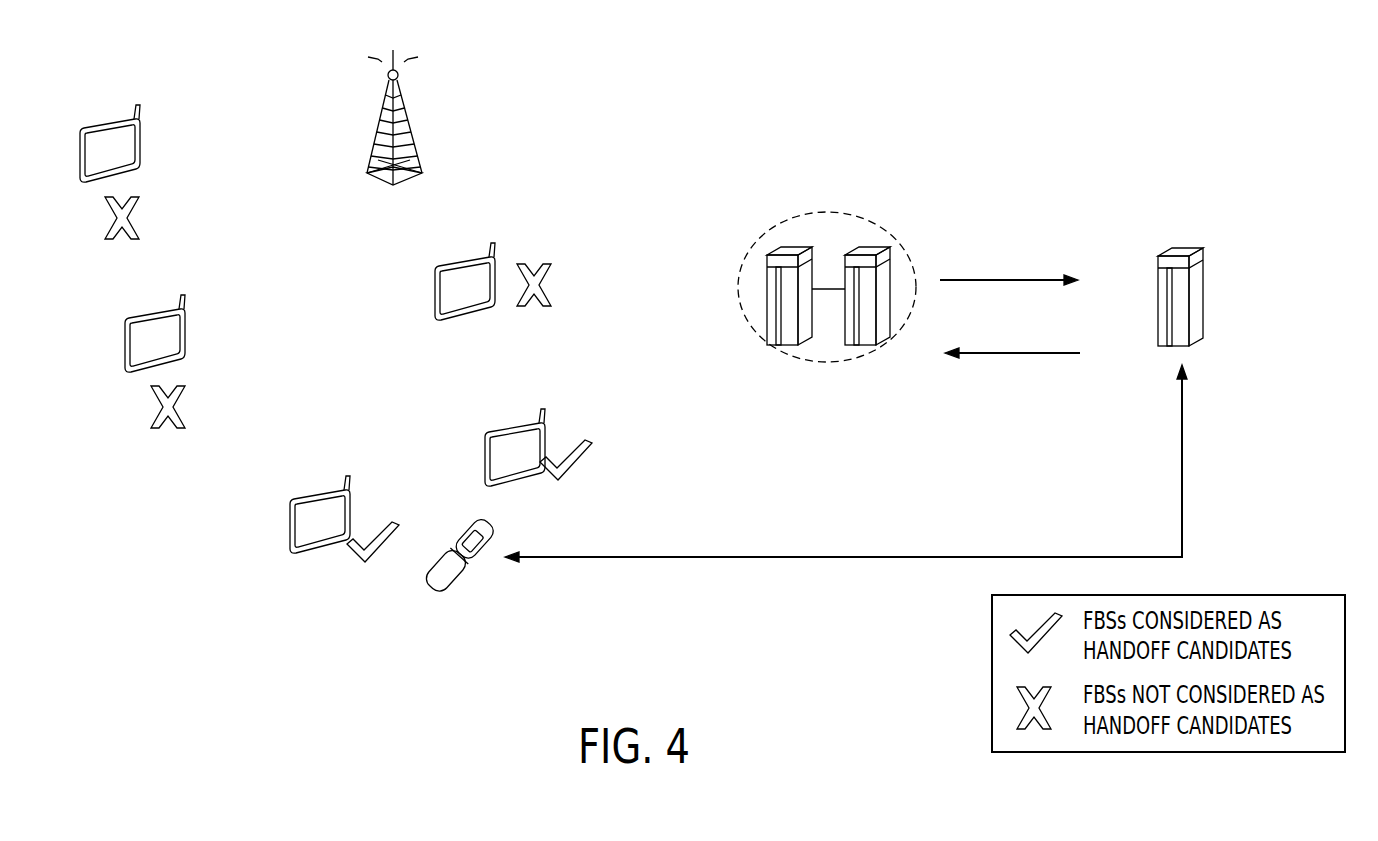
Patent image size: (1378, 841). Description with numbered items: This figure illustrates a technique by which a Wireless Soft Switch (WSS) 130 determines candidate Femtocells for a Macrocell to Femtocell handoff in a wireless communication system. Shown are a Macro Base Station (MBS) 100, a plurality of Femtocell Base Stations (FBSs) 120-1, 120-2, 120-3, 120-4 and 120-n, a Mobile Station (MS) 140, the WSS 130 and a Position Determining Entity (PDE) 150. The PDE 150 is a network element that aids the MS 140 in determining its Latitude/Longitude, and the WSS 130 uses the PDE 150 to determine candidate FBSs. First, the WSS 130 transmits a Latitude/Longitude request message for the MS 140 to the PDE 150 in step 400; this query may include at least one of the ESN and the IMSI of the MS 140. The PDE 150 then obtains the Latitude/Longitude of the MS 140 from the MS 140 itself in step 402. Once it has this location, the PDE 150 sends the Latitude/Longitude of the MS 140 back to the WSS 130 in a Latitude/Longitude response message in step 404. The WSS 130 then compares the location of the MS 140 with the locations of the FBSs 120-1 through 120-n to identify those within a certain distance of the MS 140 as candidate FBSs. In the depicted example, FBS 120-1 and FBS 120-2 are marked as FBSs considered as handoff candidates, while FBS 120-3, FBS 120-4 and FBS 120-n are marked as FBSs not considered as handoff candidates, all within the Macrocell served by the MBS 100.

The Macro Base Station 100 is at (386, 104).
The Femtocell Base Station 120-n is at (143, 140).
The Femtocell Base Station 120-4 is at (433, 294).
The Femtocell Base Station 120-3 is at (186, 333).
The Femtocell Base Station 120-2 is at (483, 458).
The Femtocell Base Station 120-1 is at (288, 528).
The Wireless Soft Switch 130 is at (770, 232).
The Mobile Station 140 is at (470, 572).
The Position Determining Entity 150 is at (1180, 262).
The Latitude/Longitude request step 400 is at (1010, 283).
The Latitude/Longitude determination step 402 is at (683, 556).
The Latitude/Longitude response step 404 is at (1062, 352).